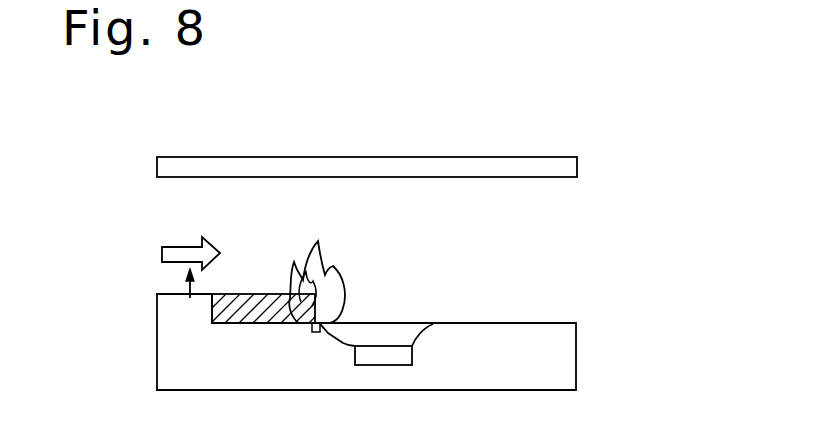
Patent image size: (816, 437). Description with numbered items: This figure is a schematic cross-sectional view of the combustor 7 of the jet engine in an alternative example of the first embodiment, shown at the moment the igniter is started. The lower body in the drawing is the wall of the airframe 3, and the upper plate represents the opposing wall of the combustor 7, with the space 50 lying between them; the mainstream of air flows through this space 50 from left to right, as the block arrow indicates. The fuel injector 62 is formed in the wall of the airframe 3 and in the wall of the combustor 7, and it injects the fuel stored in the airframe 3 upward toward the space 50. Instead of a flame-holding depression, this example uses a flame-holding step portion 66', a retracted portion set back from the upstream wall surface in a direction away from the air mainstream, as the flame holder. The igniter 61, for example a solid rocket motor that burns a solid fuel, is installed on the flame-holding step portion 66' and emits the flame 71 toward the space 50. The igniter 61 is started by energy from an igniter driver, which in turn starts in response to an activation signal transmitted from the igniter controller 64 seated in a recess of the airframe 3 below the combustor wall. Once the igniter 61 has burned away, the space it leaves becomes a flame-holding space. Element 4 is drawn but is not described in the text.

The airframe 3 is at (178, 391).
The upper plate 4 is at (337, 167).
The combustor 7 is at (617, 155).
The space 50 is at (192, 203).
The igniter 61 is at (297, 316).
The fuel injector 62 is at (190, 298).
The igniter controller 64 is at (405, 357).
The flame-holding step portion 66' is at (254, 351).
The flame 71 is at (333, 283).